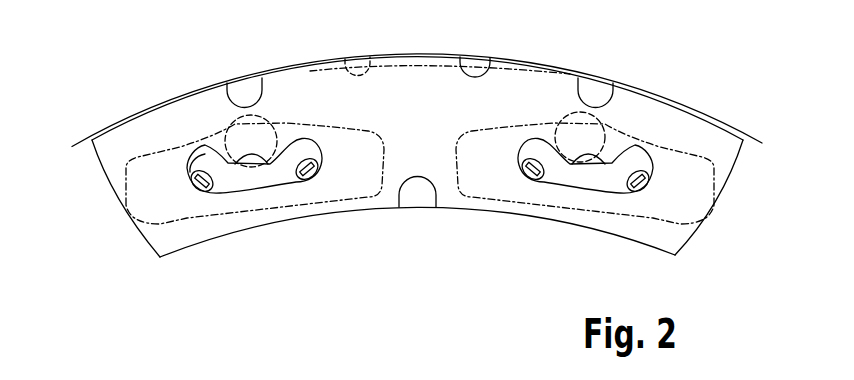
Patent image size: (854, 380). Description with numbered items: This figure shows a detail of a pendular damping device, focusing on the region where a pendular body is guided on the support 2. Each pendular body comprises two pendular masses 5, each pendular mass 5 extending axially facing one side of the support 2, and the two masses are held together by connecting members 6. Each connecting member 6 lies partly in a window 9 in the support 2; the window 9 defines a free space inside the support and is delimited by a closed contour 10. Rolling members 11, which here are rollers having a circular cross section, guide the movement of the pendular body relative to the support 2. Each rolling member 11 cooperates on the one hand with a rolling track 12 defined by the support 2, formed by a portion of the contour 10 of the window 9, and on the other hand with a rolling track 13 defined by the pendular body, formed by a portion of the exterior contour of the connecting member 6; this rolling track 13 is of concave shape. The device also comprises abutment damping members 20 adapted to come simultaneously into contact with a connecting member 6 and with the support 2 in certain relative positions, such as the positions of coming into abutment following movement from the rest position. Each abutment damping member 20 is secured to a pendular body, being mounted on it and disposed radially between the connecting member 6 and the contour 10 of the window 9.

The support 2 is at (757, 137).
The pendular mass 5 is at (723, 157).
The connecting member 6 is at (272, 178).
The window 9 is at (357, 175).
The closed contour 10 is at (372, 138).
The rolling member 11 is at (243, 140).
The rolling track 12 is at (281, 120).
The rolling track 13 is at (258, 166).
The abutment damping member 20 is at (203, 194).